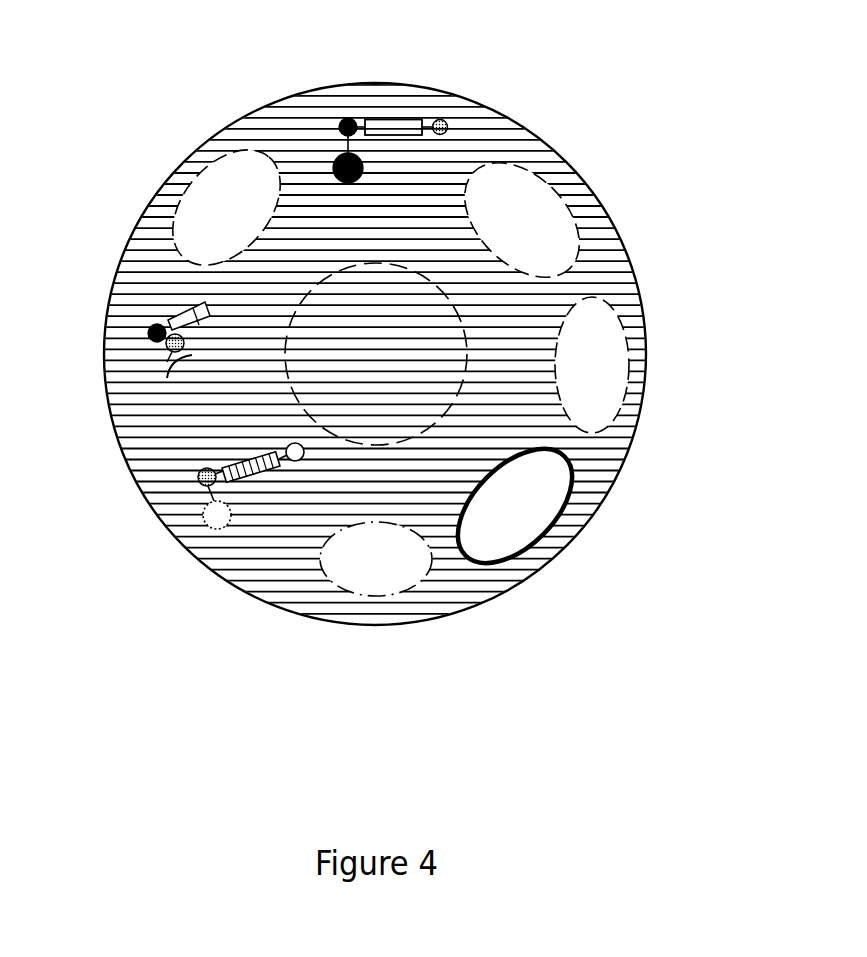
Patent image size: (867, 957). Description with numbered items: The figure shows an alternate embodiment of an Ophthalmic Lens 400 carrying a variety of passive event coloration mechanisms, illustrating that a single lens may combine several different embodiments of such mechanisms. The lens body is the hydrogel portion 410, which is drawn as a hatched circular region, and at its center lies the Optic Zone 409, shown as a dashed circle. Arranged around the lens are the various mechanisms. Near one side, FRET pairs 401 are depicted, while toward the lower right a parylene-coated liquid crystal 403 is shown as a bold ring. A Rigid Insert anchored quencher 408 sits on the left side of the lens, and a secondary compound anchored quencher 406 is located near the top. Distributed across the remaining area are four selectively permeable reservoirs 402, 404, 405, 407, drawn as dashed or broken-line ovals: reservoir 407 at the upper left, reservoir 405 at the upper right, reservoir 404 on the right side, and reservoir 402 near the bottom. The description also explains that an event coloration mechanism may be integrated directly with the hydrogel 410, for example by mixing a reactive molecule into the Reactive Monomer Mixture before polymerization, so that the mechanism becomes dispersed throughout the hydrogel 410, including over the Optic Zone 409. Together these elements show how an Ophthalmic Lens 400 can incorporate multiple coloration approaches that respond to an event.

The Ophthalmic Lens 400 is at (375, 416).
The FRET pairs 401 is at (130, 470).
The selectively permeable reservoir 402 is at (422, 568).
The parylene-coated liquid crystal 403 is at (593, 515).
The selectively permeable reservoir 404 is at (590, 385).
The selectively permeable reservoir 405 is at (540, 188).
The secondary compound anchored quencher 406 is at (388, 90).
The selectively permeable reservoir 407 is at (212, 190).
The Rigid Insert anchored quencher 408 is at (150, 340).
The Optic Zone 409 is at (366, 283).
The hydrogel portion 410 is at (231, 553).